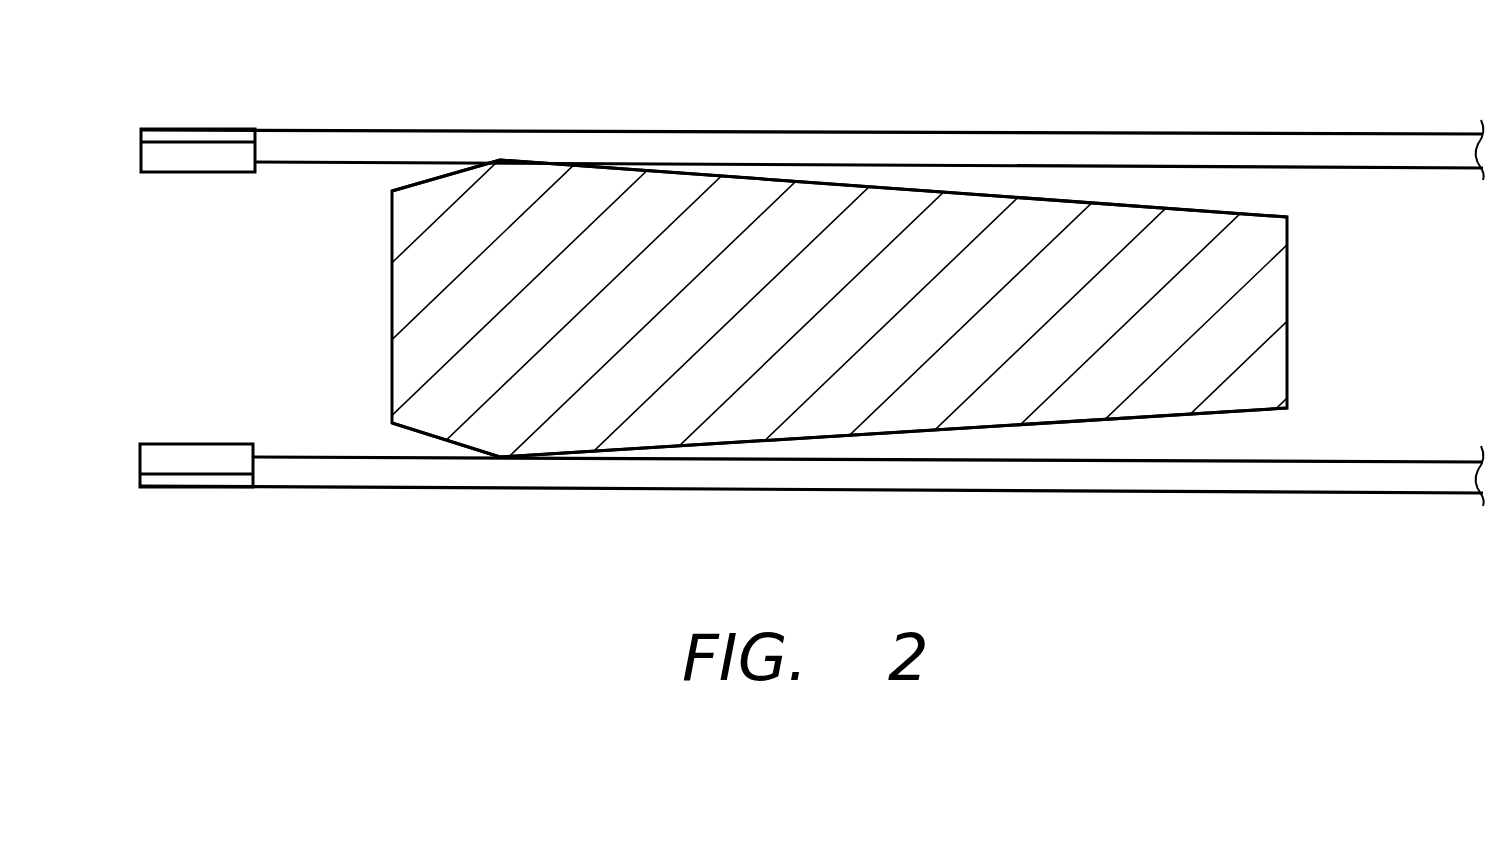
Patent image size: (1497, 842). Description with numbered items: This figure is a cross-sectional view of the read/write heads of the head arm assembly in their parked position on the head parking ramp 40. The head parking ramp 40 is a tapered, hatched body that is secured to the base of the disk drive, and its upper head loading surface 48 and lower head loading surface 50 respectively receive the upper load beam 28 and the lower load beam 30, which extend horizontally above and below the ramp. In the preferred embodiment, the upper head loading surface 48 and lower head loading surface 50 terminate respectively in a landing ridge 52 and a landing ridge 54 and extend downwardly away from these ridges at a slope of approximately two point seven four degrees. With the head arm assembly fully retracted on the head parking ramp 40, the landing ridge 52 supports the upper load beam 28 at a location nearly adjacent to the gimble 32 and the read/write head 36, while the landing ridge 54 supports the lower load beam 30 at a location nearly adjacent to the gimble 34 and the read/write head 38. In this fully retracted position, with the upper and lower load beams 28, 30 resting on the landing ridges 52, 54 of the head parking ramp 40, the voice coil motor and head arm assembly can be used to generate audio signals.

The upper load beam 28 is at (1290, 150).
The lower load beam 30 is at (1293, 477).
The gimble 32 is at (185, 128).
The gimble 34 is at (170, 488).
The read/write head 36 is at (172, 172).
The read/write head 38 is at (182, 445).
The head parking ramp 40 is at (1300, 309).
The upper head loading surface 48 is at (1063, 197).
The lower head loading surface 50 is at (1140, 420).
The landing ridge 52 is at (503, 167).
The landing ridge 54 is at (498, 457).